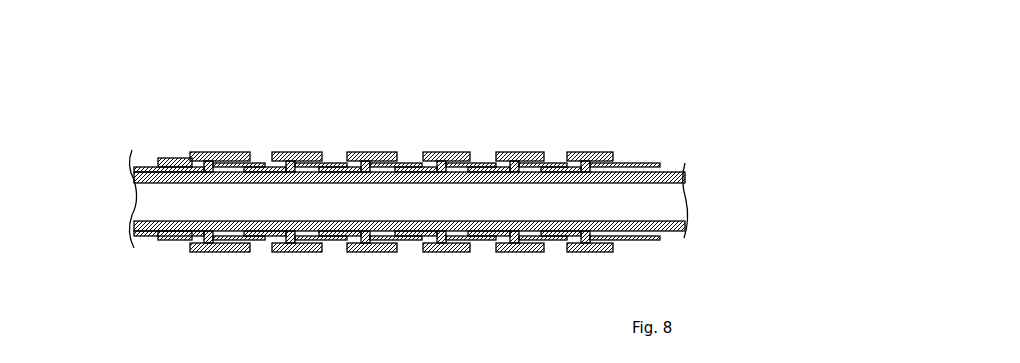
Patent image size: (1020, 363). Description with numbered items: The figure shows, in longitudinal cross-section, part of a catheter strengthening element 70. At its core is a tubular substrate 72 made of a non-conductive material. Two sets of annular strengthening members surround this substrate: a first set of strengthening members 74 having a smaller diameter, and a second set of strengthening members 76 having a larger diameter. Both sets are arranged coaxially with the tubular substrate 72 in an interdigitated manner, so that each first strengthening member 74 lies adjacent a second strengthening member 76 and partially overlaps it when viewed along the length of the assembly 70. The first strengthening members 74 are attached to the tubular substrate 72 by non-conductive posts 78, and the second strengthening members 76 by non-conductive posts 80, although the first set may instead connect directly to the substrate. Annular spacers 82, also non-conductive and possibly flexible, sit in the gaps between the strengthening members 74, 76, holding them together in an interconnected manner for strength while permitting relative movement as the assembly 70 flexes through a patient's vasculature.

The strengthening element 70 is at (124, 84).
The tubular substrate 72 is at (150, 190).
The first set of annular strengthening members 74 is at (165, 156).
The second set of annular strengthening members 76 is at (237, 150).
The non-conductive posts 78 is at (134, 172).
The non-conductive posts 80 is at (380, 152).
The annular spacers 82 is at (181, 150).